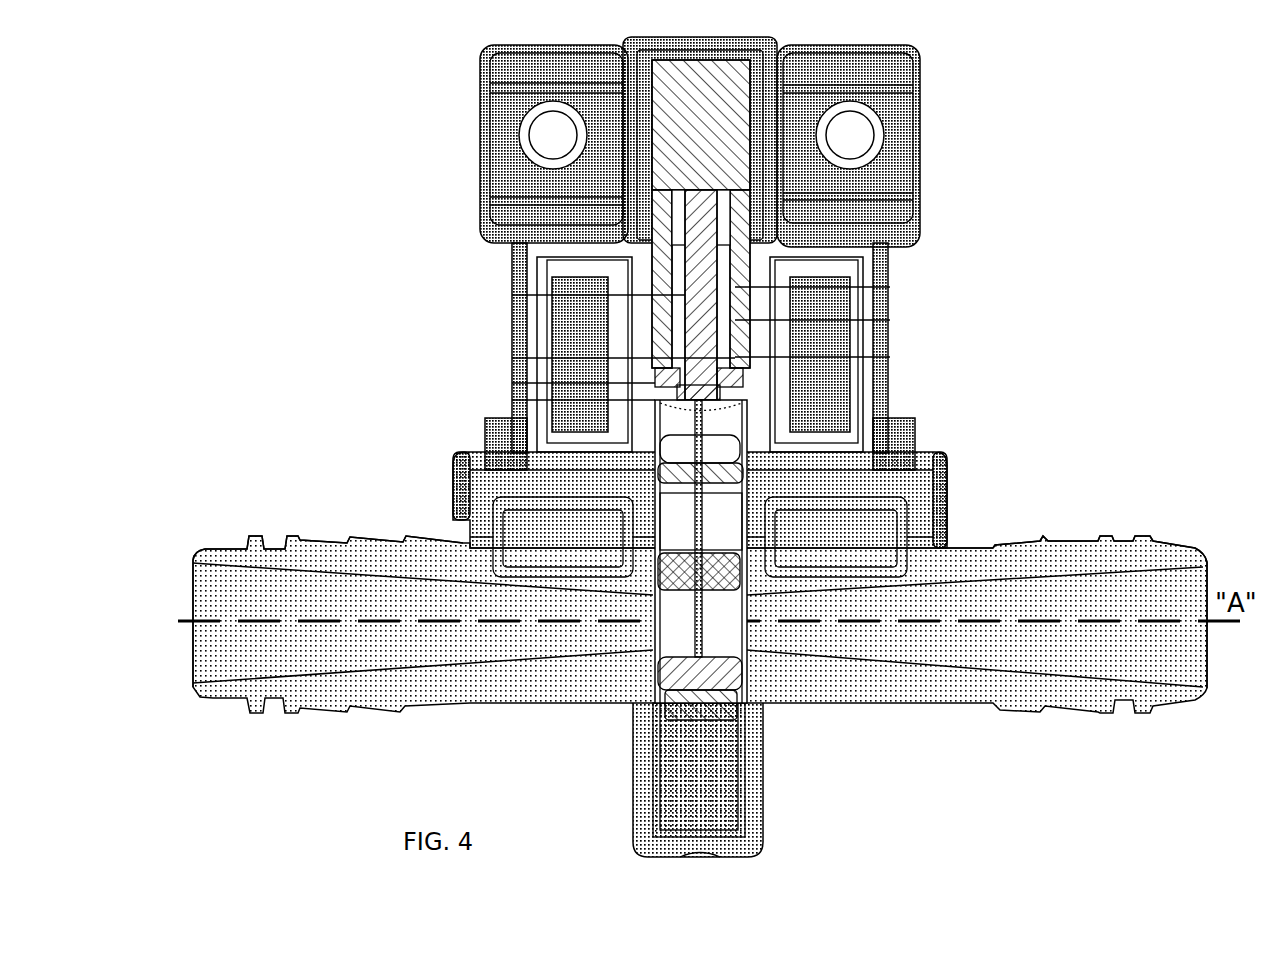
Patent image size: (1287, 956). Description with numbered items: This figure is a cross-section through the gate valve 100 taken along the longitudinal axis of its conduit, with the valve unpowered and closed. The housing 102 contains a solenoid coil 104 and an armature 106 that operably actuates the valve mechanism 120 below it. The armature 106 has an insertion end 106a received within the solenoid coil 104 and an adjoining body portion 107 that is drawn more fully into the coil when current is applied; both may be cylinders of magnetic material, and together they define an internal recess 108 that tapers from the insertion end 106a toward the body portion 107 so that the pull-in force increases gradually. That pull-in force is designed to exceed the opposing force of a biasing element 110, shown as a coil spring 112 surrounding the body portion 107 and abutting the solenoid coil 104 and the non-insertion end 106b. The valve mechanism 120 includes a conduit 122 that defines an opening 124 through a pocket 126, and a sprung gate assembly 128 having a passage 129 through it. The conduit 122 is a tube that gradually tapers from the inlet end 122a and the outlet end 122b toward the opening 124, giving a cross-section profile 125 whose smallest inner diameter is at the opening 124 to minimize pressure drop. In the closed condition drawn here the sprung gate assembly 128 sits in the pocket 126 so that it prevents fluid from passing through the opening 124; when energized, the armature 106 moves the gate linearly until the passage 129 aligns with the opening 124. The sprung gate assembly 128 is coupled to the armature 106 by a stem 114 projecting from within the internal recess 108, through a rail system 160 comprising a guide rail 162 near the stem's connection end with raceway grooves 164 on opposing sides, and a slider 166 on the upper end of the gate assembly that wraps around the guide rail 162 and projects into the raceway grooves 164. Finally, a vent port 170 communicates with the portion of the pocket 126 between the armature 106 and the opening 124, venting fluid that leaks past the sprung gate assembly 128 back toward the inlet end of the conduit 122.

The gate valve 100 is at (1115, 116).
The housing 102 is at (453, 482).
The solenoid coil 104 is at (890, 357).
The armature 106 is at (482, 195).
The insertion end 106a is at (890, 320).
The non-insertion end 106b is at (482, 82).
The body portion 107 is at (923, 200).
The internal recess 108 is at (890, 287).
The biasing element 110 is at (482, 95).
The coil spring 112 is at (850, 135).
The stem 114 is at (512, 295).
The valve mechanism 120 is at (937, 532).
The conduit 122 is at (285, 535).
The inlet end 122a is at (1205, 690).
The outlet end 122b is at (193, 690).
The opening 124 is at (655, 648).
The cross-section profile 125 is at (290, 609).
The pocket 126 is at (463, 535).
The sprung gate assembly 128 is at (745, 705).
The passage 129 is at (765, 540).
The rail system 160 is at (512, 383).
The guide rail 162 is at (512, 400).
The raceway grooves 164 is at (512, 358).
The slider 166 is at (892, 382).
The vent port 170 is at (950, 573).